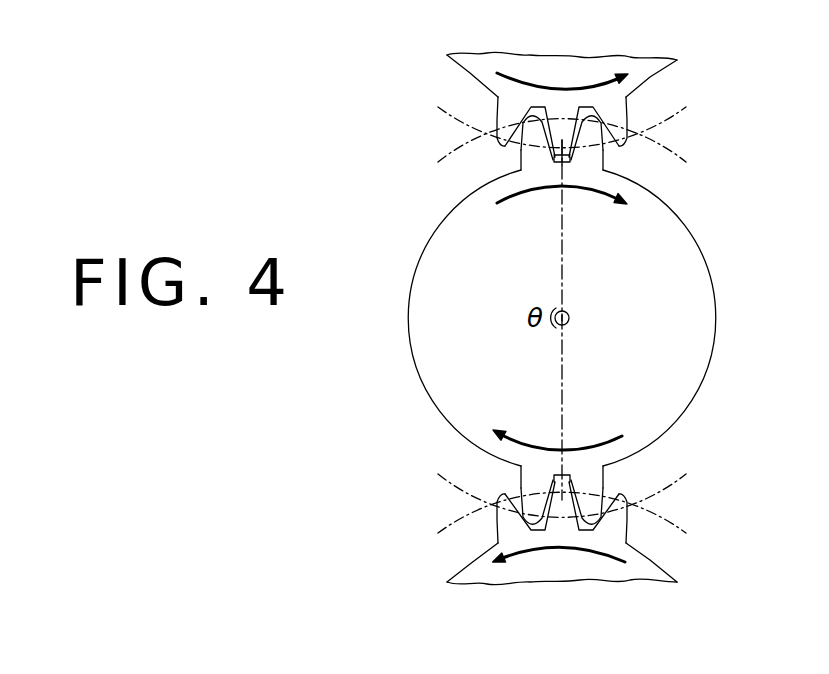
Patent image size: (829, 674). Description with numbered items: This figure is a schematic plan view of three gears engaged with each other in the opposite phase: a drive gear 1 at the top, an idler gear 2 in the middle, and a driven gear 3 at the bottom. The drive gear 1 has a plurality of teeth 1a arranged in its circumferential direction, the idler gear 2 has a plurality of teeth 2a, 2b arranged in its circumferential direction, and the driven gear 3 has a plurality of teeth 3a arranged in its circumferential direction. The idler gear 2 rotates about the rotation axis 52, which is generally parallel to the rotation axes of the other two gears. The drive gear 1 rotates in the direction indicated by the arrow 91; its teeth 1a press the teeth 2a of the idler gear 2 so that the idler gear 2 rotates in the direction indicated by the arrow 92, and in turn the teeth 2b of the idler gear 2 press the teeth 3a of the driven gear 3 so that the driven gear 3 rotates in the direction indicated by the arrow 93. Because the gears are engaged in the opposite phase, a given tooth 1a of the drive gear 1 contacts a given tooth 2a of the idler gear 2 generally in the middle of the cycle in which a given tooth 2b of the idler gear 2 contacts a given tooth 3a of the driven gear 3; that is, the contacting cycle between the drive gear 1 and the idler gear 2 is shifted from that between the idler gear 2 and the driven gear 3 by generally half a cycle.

The drive gear 1 is at (560, 75).
The teeth of the drive gear 1a is at (560, 122).
The idler gear 2 is at (672, 297).
The teeth of the idler gear 2a is at (537, 154).
The teeth of the idler gear 2b is at (537, 482).
The driven gear 3 is at (564, 556).
The teeth of the driven gear 3a is at (569, 523).
The rotation axis 52 is at (570, 318).
The arrow 91 is at (578, 90).
The arrow 92 is at (603, 170).
The arrow 93 is at (500, 540).